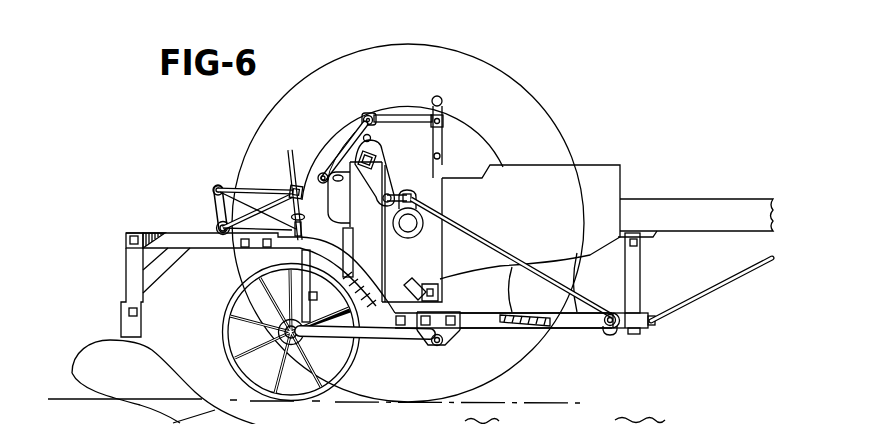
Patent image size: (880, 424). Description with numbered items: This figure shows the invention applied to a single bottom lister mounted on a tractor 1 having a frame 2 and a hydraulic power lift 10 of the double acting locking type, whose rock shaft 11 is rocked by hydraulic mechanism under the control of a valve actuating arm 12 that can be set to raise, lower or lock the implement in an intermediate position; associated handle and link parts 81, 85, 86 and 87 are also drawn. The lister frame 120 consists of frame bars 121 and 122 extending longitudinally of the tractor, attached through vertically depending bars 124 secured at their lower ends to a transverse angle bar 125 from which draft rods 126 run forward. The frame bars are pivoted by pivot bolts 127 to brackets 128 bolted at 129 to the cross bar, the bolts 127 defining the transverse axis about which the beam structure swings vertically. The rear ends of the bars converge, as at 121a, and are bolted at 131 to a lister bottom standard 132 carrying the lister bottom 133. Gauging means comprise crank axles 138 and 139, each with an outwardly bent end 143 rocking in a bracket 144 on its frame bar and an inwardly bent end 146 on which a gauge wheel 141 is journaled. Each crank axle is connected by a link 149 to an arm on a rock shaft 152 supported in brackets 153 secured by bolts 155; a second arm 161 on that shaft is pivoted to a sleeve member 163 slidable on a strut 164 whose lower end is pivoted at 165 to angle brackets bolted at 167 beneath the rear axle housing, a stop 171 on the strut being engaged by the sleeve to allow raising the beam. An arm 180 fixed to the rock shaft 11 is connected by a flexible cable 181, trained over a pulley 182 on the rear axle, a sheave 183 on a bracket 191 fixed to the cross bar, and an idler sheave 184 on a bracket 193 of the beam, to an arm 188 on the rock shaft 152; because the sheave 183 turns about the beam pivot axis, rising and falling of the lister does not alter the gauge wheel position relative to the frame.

The tractor 1 is at (661, 176).
The frame 2 is at (713, 207).
The power lift 10 is at (325, 160).
The rock shaft 11 is at (375, 152).
The valve actuating arm 12 is at (338, 182).
The handle rod 81 is at (441, 103).
The link 85 is at (409, 106).
The pivot 86 is at (366, 117).
The lever arm 87 is at (352, 125).
The lister frame 120 is at (491, 340).
The frame bar 121 is at (490, 326).
The converging portion 121a is at (201, 247).
The frame bar 122 is at (545, 315).
The vertically depending bar 124 is at (636, 266).
The angle bar 125 is at (636, 332).
The draft rod 126 is at (697, 296).
The pivot bolt 127 is at (610, 335).
The bracket 128 is at (632, 322).
The bolt 129 is at (656, 323).
The bolt 131 is at (134, 236).
The lister bottom standard 132 is at (127, 272).
The lister bottom 133 is at (145, 357).
The crank axle 138 is at (420, 341).
The crank axle 139 is at (376, 341).
The gauge wheel 141 is at (240, 379).
The laterally outwardly bent end 143 is at (438, 346).
The bracket 144 is at (445, 318).
The laterally inwardly bent end 146 is at (296, 345).
The link 149 is at (285, 291).
The rock shaft 152 is at (216, 222).
The bracket 153 is at (233, 247).
The bolt 155 is at (243, 252).
The second arm 161 is at (269, 199).
The sleeve member 163 is at (291, 184).
The strut 164 is at (301, 229).
The pivot connection 165 is at (318, 295).
The bolt 167 is at (428, 291).
The stop 171 is at (300, 217).
The arm 180 is at (380, 187).
The flexible cable 181 is at (463, 223).
The pulley 182 is at (408, 195).
The sheave 183 is at (618, 307).
The idler sheave 184 is at (400, 279).
The arm 188 is at (213, 190).
The bracket 191 is at (628, 317).
The bracket 193 is at (415, 290).